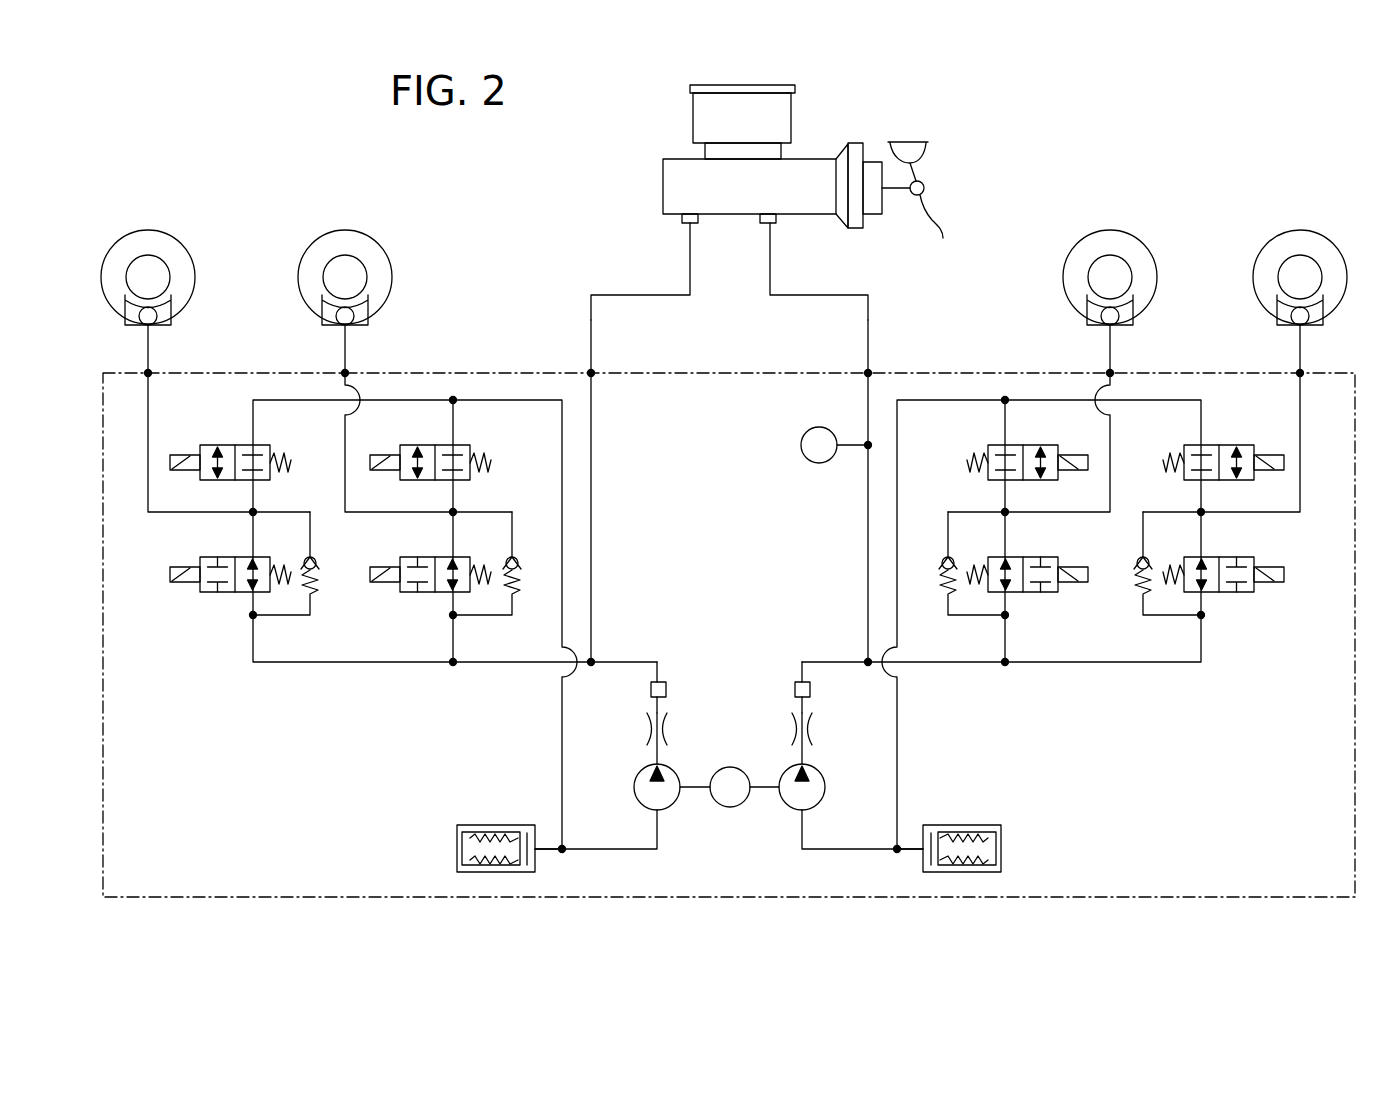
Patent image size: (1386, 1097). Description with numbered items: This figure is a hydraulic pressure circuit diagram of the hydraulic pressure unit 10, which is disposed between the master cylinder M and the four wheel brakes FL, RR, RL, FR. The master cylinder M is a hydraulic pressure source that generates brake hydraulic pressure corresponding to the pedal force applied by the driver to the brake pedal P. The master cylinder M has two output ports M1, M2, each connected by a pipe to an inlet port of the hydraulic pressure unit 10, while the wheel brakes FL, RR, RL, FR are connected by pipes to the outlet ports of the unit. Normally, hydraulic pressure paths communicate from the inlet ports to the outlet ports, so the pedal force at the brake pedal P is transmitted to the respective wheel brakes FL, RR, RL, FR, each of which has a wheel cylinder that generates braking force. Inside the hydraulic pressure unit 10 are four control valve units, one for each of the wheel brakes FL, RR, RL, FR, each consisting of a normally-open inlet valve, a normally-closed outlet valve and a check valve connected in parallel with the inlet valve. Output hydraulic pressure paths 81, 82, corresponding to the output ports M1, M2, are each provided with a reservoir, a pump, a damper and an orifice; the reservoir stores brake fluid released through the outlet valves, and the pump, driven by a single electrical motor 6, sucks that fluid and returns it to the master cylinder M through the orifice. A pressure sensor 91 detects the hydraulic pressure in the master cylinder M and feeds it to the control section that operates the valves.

The electrical motor 6 is at (732, 767).
The hydraulic pressure unit 10 is at (727, 372).
The output hydraulic pressure path 81 is at (591, 322).
The output hydraulic pressure path 82 is at (868, 322).
The pressure sensor 91 is at (801, 445).
The master cylinder M is at (663, 185).
The output port M1 is at (688, 222).
The output port M2 is at (772, 222).
The brake pedal P is at (943, 232).
The wheel brake FL is at (152, 220).
The wheel brake RR is at (349, 220).
The wheel brake RL is at (1114, 220).
The wheel brake FR is at (1304, 220).